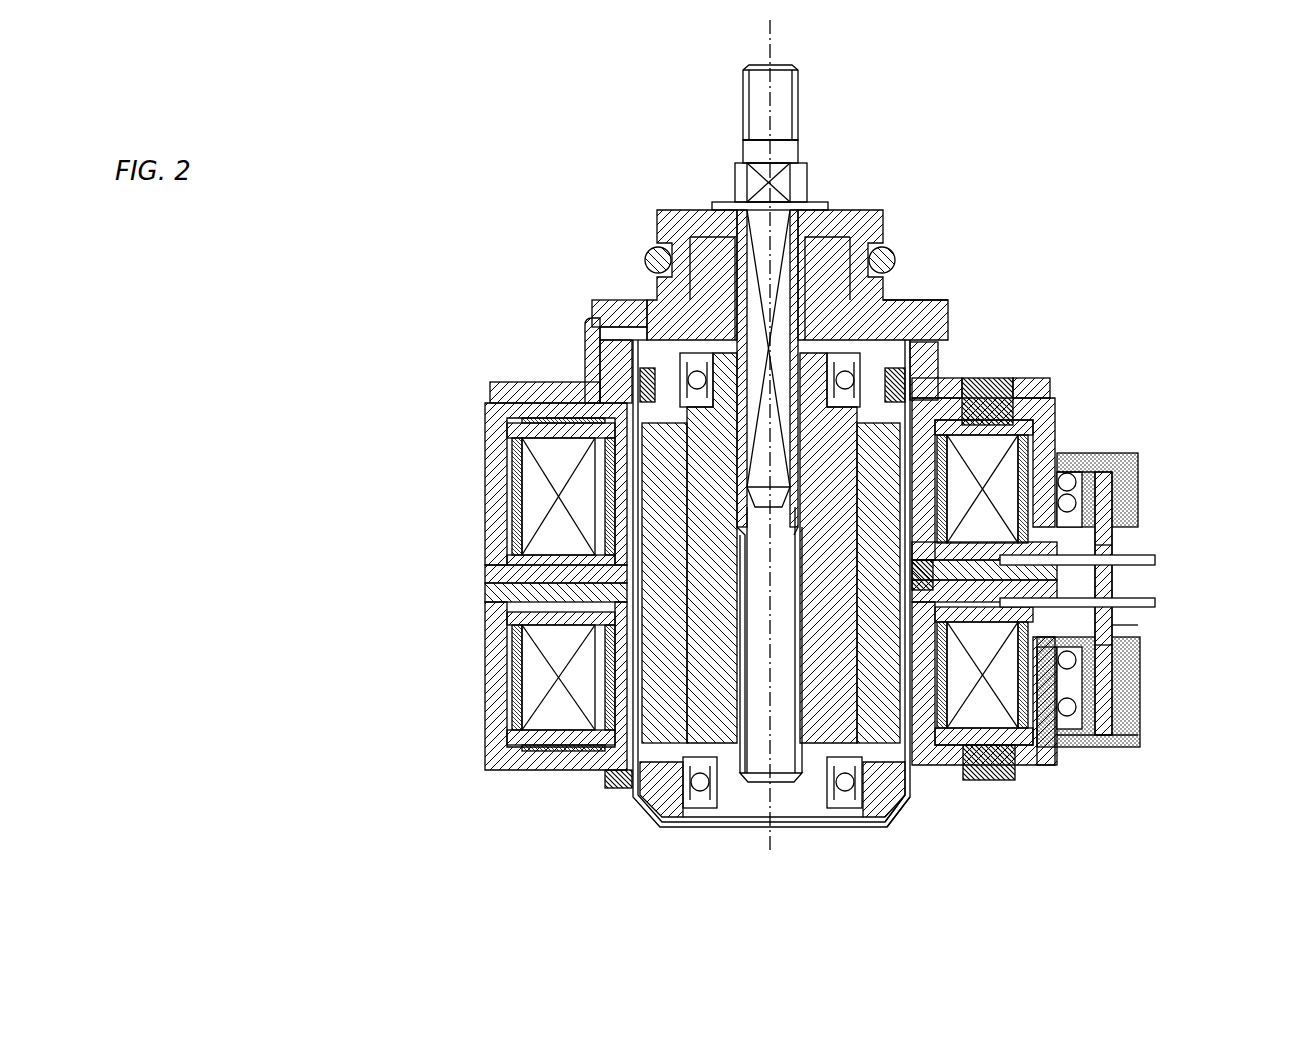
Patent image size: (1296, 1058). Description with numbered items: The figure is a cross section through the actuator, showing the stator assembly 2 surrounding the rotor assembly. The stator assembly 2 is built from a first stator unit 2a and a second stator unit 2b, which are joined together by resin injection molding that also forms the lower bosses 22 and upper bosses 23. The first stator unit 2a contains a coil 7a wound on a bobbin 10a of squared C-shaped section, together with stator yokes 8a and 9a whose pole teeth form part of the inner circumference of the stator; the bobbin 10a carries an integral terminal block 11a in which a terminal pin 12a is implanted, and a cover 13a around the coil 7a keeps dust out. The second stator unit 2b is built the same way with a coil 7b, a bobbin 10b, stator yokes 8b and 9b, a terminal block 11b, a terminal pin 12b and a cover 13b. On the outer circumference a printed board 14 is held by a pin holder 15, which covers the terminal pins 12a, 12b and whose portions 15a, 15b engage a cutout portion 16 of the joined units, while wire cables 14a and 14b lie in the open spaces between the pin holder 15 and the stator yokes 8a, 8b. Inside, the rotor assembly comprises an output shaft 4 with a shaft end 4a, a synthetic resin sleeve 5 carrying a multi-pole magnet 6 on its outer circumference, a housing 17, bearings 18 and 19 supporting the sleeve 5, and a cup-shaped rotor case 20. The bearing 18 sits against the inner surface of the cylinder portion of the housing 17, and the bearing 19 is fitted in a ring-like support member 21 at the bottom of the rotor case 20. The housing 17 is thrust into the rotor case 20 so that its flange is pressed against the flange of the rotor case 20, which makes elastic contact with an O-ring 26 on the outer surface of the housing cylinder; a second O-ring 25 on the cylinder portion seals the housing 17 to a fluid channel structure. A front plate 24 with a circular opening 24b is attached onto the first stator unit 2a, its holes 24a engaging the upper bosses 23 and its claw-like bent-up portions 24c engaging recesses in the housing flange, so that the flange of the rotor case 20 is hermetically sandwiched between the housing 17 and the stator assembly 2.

The stator assembly 2 is at (657, 587).
The first stator unit 2a is at (676, 472).
The second stator unit 2b is at (676, 686).
The output shaft 4 is at (758, 65).
The shaft threaded end 4a is at (800, 110).
The sleeve 5 is at (708, 626).
The magnet 6 is at (640, 740).
The coil 7a is at (525, 480).
The coil 7b is at (689, 686).
The stator yoke 8a is at (709, 562).
The stator yoke 8b is at (490, 592).
The stator yoke 9a is at (485, 435).
The stator yoke 9b is at (490, 745).
The bobbin 10a is at (512, 542).
The bobbin 10b is at (512, 650).
The terminal block 11a is at (1105, 545).
The terminal block 11b is at (1105, 645).
The terminal pin 12a is at (1158, 558).
The terminal pin 12b is at (1162, 603).
The cover 13a is at (1060, 420).
The cover 13b is at (1068, 748).
The printed board 14 is at (1105, 690).
The wire cable 14a is at (1070, 460).
The wire cable 14b is at (1098, 748).
The pin holder 15 is at (1132, 748).
The portion of pin holder 15a is at (1100, 477).
The portion of pin holder 15b is at (1140, 687).
The cutout portion 16 is at (1067, 482).
The housing 17 is at (687, 210).
The bearing 18 is at (947, 350).
The bearing 19 is at (845, 790).
The rotor case 20 is at (747, 827).
The ring-like support member 21 is at (900, 817).
The lower boss 22 is at (990, 780).
The upper boss 23 is at (1012, 378).
The front plate 24 is at (1060, 400).
The hole 24a is at (1038, 378).
The circular opening 24b is at (985, 378).
The bent-up portion 24c is at (613, 313).
The O-ring 25 is at (648, 258).
The O-ring 26 is at (590, 380).